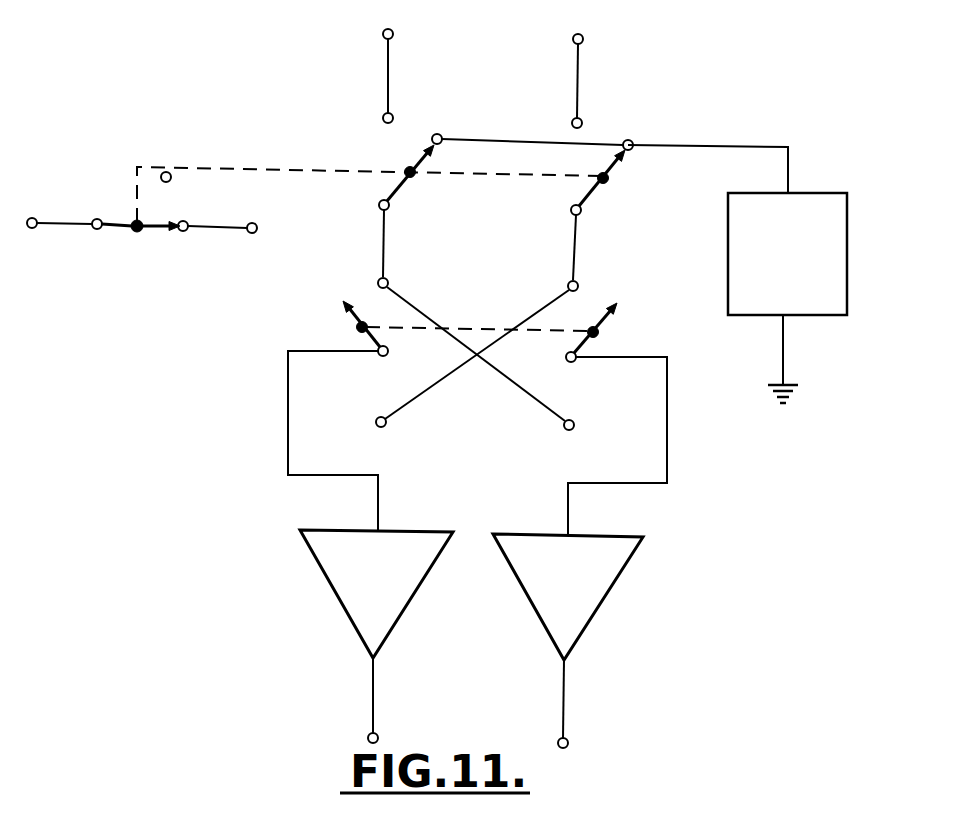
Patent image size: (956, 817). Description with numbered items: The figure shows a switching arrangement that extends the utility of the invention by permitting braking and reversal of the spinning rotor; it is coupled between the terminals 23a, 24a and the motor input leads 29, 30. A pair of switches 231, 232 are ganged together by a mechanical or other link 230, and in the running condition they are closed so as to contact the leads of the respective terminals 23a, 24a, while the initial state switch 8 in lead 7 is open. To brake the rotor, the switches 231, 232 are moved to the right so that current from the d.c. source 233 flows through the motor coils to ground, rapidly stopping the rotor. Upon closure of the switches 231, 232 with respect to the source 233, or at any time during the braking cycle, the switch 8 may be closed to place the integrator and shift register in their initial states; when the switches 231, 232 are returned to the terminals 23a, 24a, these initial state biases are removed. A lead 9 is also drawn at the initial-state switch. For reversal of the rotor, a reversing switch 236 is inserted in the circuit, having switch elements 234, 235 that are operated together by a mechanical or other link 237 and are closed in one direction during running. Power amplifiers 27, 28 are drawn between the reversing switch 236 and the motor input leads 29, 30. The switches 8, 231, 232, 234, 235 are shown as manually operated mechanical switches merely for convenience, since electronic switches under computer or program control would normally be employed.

The lead 7 is at (58, 221).
The initial state switch 8 is at (142, 232).
The output terminal 9 is at (257, 226).
The terminal 23a is at (393, 33).
The terminal 24a is at (583, 38).
The power amplifier 27 is at (332, 594).
The power amplifier 28 is at (610, 590).
The motor input lead 29 is at (372, 698).
The motor input lead 30 is at (568, 702).
The link 230 is at (312, 168).
The switch 231 is at (404, 182).
The switch 232 is at (594, 190).
The d.c. source 233 is at (753, 274).
The switch element 234 is at (354, 320).
The switch element 235 is at (604, 321).
The reversing switch 236 is at (214, 391).
The link 237 is at (480, 328).